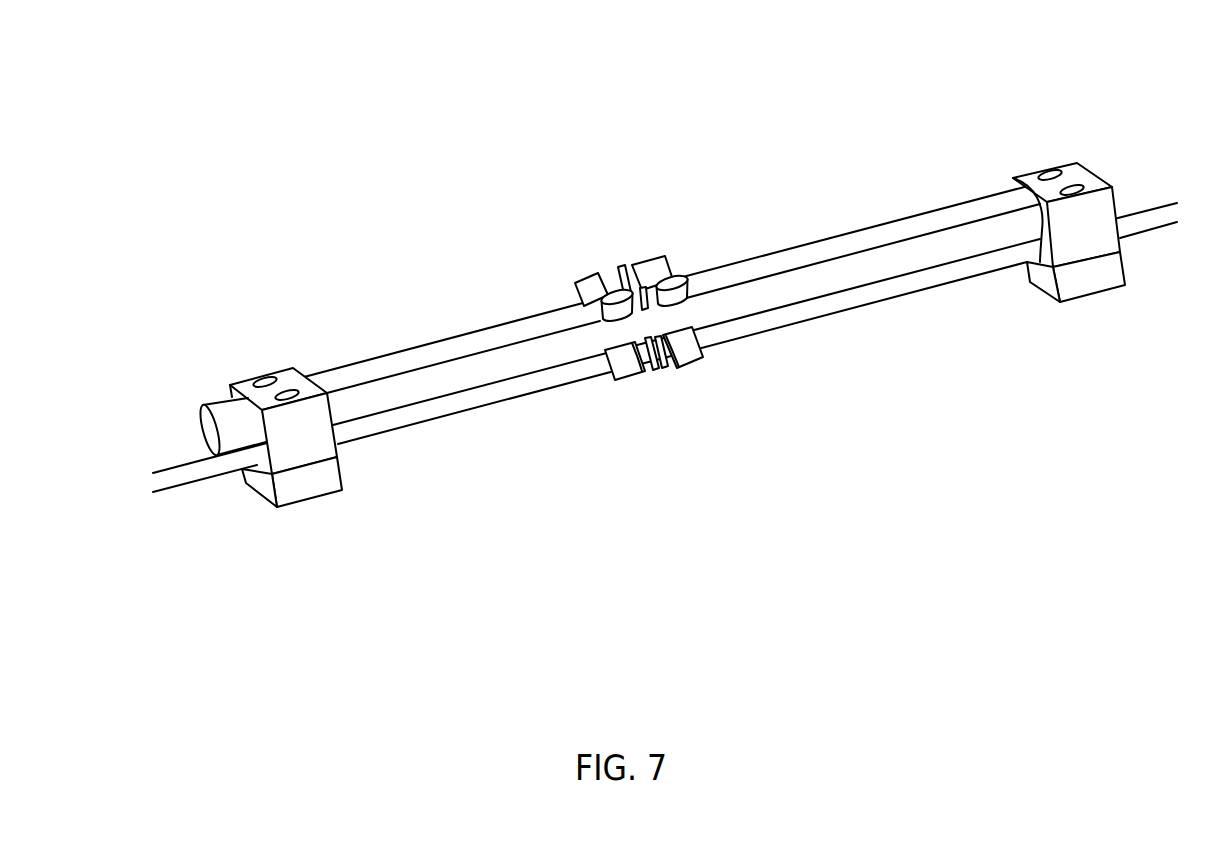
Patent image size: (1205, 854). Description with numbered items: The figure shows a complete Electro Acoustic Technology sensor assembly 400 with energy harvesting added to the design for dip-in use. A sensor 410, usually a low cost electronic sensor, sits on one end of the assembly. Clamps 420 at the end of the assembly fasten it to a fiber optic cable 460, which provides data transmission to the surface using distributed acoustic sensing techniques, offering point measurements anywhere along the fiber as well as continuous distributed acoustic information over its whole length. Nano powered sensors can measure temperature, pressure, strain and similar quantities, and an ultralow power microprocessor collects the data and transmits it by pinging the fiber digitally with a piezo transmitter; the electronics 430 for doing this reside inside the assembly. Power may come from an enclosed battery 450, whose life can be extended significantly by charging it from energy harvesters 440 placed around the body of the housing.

The complete EAT sensor assembly 400 is at (578, 100).
The sensor 410 is at (212, 445).
The clamps 420 is at (268, 380).
The electronics 430 is at (437, 343).
The energy harvesters 440 is at (603, 273).
The battery 450 is at (830, 237).
The fiber optic cable 460 is at (1155, 200).